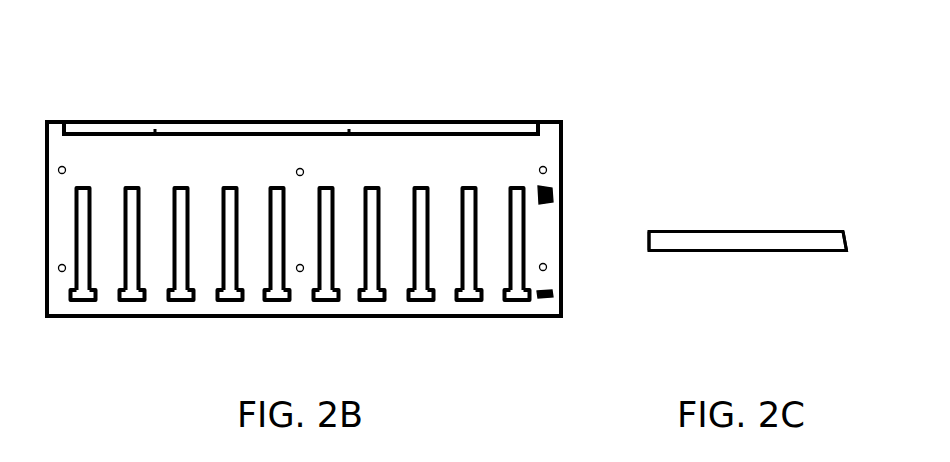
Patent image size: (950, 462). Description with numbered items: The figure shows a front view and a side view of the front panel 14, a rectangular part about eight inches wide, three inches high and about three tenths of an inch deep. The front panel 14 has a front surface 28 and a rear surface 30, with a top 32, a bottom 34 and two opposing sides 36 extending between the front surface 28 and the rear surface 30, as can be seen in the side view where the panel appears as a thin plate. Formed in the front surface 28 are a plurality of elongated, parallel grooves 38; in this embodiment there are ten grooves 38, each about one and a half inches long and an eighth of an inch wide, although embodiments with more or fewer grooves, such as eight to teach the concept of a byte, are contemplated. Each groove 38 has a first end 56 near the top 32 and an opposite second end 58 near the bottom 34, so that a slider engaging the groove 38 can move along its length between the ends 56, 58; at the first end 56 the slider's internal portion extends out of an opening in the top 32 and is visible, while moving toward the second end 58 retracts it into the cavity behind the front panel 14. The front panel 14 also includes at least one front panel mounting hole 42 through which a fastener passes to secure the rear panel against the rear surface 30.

In FIG. 2B, the front panel 14 is at (512, 85).
In FIG. 2C, the front panel 14 is at (770, 210).
In FIG. 2B, the front surface 28 is at (194, 160).
In FIG. 2C, the front surface 28 is at (688, 232).
In FIG. 2C, the rear surface 30 is at (773, 248).
In FIG. 2B, the top 32 is at (365, 122).
In FIG. 2C, the top 32 is at (845, 242).
In FIG. 2B, the bottom 34 is at (307, 315).
In FIG. 2C, the bottom 34 is at (647, 237).
In FIG. 2B, the sides 36 is at (563, 175).
In FIG. 2C, the sides 36 is at (733, 240).
In FIG. 2B, the grooves 38 is at (130, 185).
In FIG. 2B, the front panel mounting hole 42 is at (61, 166).
In FIG. 2B, the first end 56 is at (229, 186).
In FIG. 2B, the second end 58 is at (230, 302).